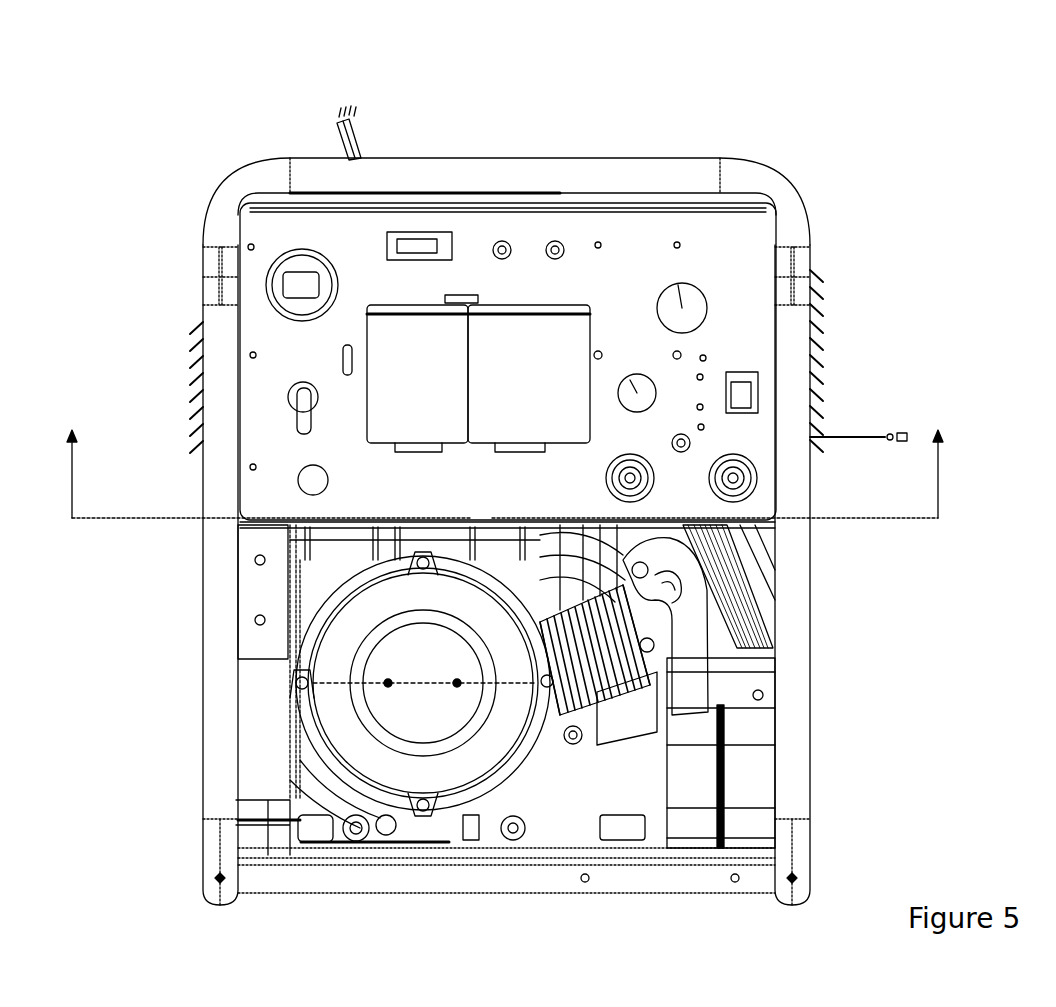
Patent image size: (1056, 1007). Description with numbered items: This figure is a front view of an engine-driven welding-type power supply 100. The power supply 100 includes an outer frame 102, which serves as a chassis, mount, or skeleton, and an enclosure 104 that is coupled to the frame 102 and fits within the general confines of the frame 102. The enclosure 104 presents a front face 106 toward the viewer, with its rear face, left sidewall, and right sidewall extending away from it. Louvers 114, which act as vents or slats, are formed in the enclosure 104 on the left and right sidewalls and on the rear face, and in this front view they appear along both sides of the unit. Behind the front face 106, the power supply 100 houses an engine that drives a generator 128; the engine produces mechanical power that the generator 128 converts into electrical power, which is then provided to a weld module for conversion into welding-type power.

The engine-driven welding-type power supply 100 is at (944, 33).
The outer frame 102 is at (226, 590).
The enclosure 104 is at (267, 235).
The front face 106 is at (725, 277).
The louvers 114 is at (172, 345).
The generator 128 is at (328, 665).